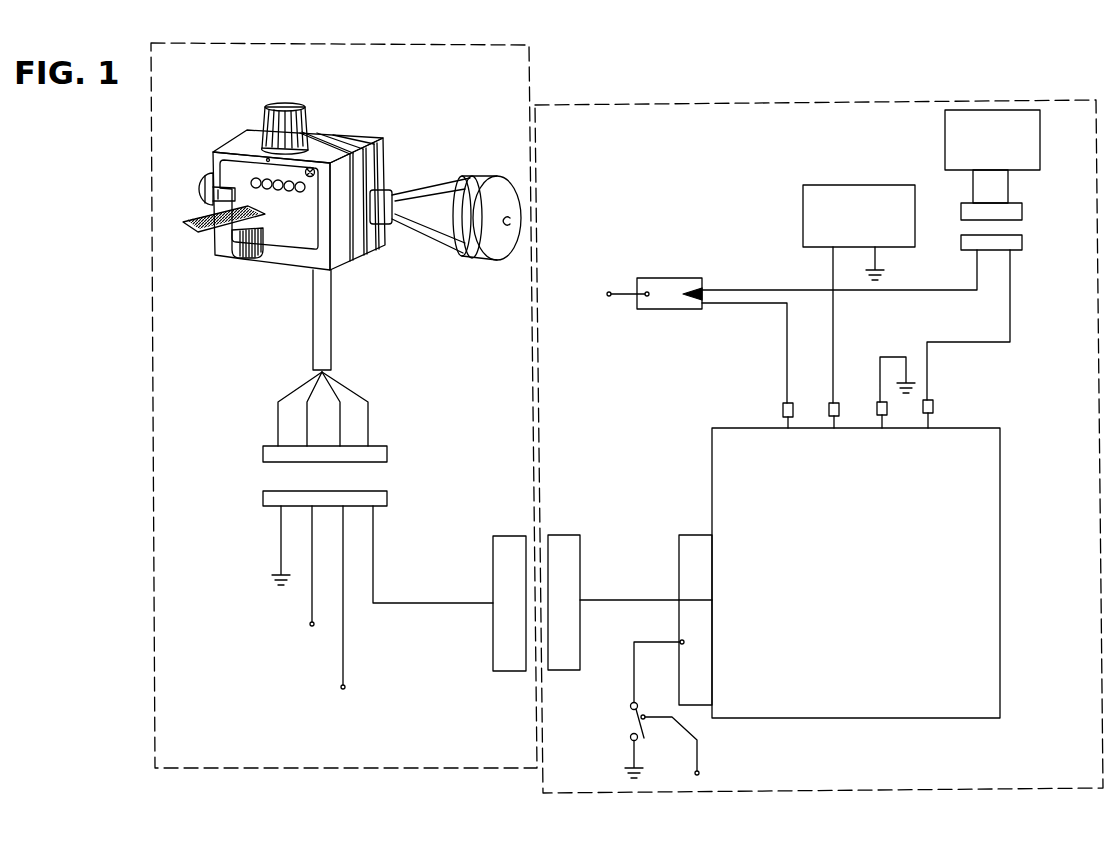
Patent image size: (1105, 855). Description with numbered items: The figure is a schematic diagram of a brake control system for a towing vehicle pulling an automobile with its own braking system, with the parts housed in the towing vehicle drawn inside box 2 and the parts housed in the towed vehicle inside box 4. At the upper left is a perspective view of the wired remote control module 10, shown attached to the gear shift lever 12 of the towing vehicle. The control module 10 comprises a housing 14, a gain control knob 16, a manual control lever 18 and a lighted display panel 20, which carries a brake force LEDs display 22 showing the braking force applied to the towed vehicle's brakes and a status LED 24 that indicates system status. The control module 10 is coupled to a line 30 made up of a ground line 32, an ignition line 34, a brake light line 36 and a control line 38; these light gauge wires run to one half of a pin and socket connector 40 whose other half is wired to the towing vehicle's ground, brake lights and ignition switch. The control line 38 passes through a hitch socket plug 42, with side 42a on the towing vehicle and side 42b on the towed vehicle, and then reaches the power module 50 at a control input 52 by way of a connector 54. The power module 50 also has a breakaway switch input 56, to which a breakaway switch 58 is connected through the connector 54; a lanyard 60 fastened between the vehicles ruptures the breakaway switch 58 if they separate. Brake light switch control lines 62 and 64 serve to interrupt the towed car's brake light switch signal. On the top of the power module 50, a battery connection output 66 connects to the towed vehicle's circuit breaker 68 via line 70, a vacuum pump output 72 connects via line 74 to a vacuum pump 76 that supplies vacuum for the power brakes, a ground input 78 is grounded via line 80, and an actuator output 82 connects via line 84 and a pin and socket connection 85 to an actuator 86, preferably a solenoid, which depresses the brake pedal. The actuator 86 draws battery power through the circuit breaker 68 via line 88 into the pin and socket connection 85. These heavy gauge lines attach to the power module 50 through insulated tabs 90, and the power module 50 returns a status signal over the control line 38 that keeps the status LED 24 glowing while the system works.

The box 2 is at (163, 760).
The box 4 is at (1080, 778).
The control module 10 is at (343, 182).
The gear shift lever 12 is at (440, 188).
The housing 14 is at (345, 128).
The gain control knob 16 is at (285, 106).
The manual control lever 18 is at (196, 232).
The lighted display panel 20 is at (213, 160).
The brake force LEDs display 22 is at (281, 198).
The status LED 24 is at (302, 206).
The line 30 is at (323, 312).
The ground line 32 is at (280, 395).
The ignition line 34 is at (309, 436).
The brake light line 36 is at (340, 436).
The control line 38 is at (368, 398).
The pin and socket connector 40 is at (252, 452).
The hitch socket plug 42 is at (533, 591).
The hitch socket plug side 42a is at (500, 672).
The hitch socket plug side 42b is at (565, 672).
The power module 50 is at (847, 590).
The control input 52 is at (712, 600).
The connector 54 is at (685, 535).
The breakaway switch input 56 is at (712, 643).
The breakaway switch 58 is at (630, 735).
The lanyard 60 is at (700, 768).
The brake light switch control line 62 is at (712, 538).
The brake light switch control line 64 is at (712, 700).
The battery connection output 66 is at (788, 430).
The circuit breaker 68 is at (653, 278).
The line 70 is at (787, 350).
The vacuum pump output 72 is at (834, 428).
The line 74 is at (832, 275).
The vacuum pump 76 is at (886, 185).
The ground input 78 is at (882, 428).
The line 80 is at (884, 357).
The actuator output 82 is at (928, 428).
The line 84 is at (1012, 292).
The pin and socket connection 85 is at (1030, 203).
The actuator 86 is at (1040, 158).
The line 88 is at (726, 290).
The insulated tabs 90 is at (783, 405).